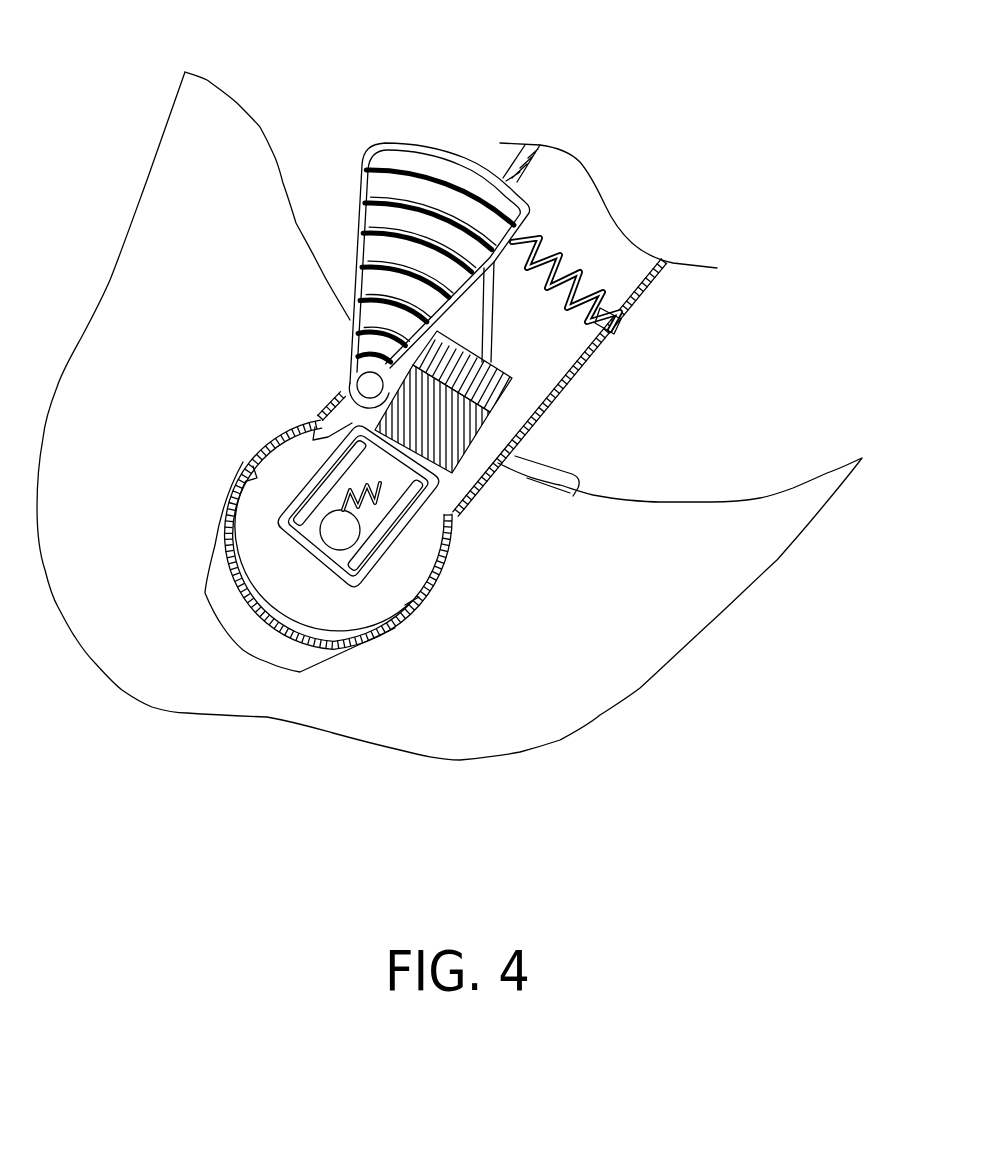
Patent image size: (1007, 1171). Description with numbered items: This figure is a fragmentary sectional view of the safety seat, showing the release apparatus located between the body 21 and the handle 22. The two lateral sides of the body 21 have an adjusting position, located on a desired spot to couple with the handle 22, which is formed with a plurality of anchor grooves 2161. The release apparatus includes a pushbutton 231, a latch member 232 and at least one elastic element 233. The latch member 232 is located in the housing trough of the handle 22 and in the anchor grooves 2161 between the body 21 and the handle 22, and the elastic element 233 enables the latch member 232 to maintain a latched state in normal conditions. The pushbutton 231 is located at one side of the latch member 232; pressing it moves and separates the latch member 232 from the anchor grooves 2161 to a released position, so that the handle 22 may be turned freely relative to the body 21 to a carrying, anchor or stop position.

The body 21 is at (711, 497).
The handle 22 is at (663, 281).
The anchor grooves 2161 is at (430, 577).
The pushbutton 231 is at (393, 160).
The latch member 232 is at (421, 536).
The elastic element 233 is at (365, 487).